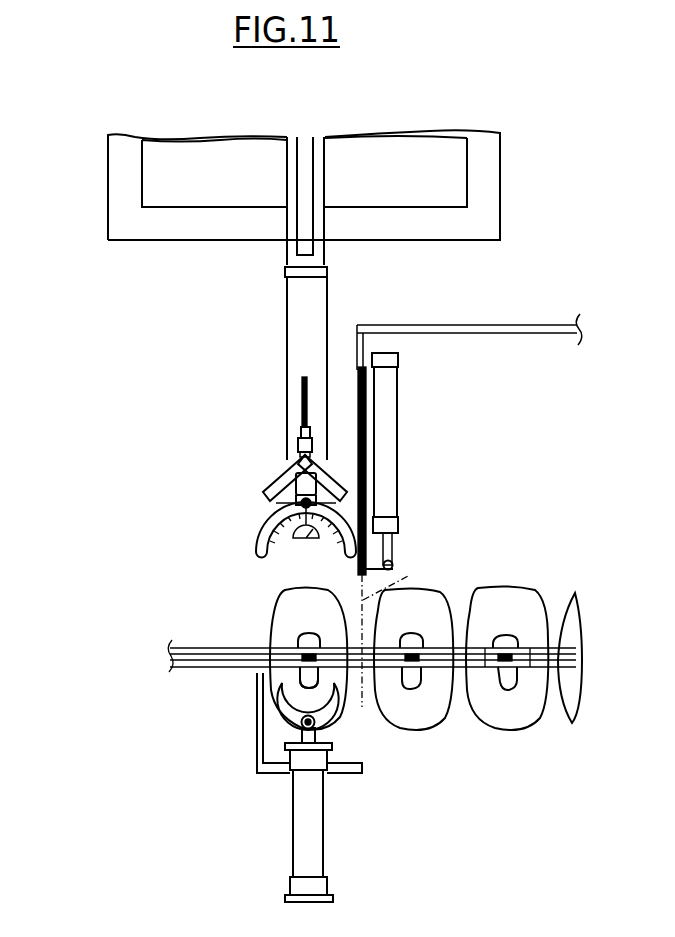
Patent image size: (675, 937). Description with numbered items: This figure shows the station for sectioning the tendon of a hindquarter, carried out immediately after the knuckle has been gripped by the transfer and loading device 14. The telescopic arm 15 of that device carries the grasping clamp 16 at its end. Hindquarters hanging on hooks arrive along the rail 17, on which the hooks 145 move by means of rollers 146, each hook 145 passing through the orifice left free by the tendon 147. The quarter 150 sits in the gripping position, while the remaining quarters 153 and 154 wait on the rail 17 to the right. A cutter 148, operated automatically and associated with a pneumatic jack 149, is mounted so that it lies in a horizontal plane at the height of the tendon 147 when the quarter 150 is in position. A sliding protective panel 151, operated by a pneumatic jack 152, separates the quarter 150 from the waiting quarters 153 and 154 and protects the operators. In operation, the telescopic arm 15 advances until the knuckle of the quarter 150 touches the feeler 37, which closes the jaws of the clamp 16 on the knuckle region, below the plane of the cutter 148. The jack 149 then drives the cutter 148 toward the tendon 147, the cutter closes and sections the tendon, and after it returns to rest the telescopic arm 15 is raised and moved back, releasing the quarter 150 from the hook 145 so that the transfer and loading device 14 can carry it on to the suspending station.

The transfer and loading device 14 is at (108, 205).
The telescopic arm 15 is at (300, 312).
The grasping clamp 16 is at (257, 537).
The feeler 37 is at (293, 543).
The pneumatic jack 152 is at (385, 424).
The sliding protective panel 151 is at (370, 498).
The rail 17 is at (197, 648).
The quarter 150 is at (278, 642).
The hook 145 is at (300, 643).
The tendon 147 is at (298, 677).
The cutter 148 is at (327, 713).
The pneumatic jack 149 is at (312, 827).
The waiting quarter 153 is at (433, 705).
The waiting quarter 154 is at (492, 703).
The rollers 146 is at (505, 683).